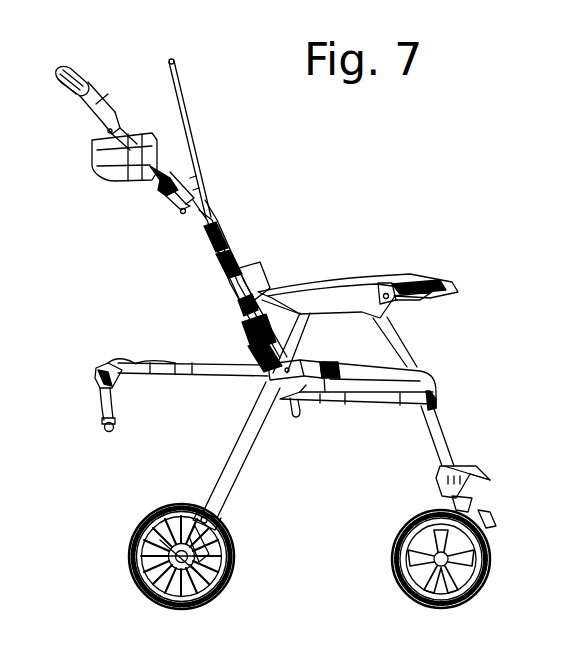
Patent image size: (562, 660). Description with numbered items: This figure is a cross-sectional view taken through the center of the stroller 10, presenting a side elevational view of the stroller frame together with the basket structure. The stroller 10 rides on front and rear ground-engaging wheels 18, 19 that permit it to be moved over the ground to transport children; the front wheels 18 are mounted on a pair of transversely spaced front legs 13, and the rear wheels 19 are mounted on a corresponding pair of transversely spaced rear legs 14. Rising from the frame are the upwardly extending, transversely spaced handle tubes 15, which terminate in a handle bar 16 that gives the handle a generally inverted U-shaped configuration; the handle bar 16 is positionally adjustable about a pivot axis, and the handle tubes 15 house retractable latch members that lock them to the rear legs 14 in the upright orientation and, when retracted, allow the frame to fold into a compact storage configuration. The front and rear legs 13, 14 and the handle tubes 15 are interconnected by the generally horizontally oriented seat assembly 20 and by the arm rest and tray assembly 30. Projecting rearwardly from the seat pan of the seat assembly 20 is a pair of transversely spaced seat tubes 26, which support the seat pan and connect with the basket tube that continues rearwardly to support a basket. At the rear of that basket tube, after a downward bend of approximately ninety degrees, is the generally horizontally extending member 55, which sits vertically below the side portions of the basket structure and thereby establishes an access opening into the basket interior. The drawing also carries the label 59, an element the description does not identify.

The stroller 10 is at (413, 181).
The front legs 13 is at (442, 448).
The rear legs 14 is at (233, 468).
The handle tubes 15 is at (168, 204).
The handle bar 16 is at (58, 70).
The front wheels 18 is at (474, 598).
The rear wheels 19 is at (222, 588).
The seat assembly 20 is at (380, 410).
The seat tubes 26 is at (223, 363).
The arm rest and tray assembly 30 is at (388, 282).
The horizontal member 55 is at (112, 432).
The front bracket 59 is at (97, 371).